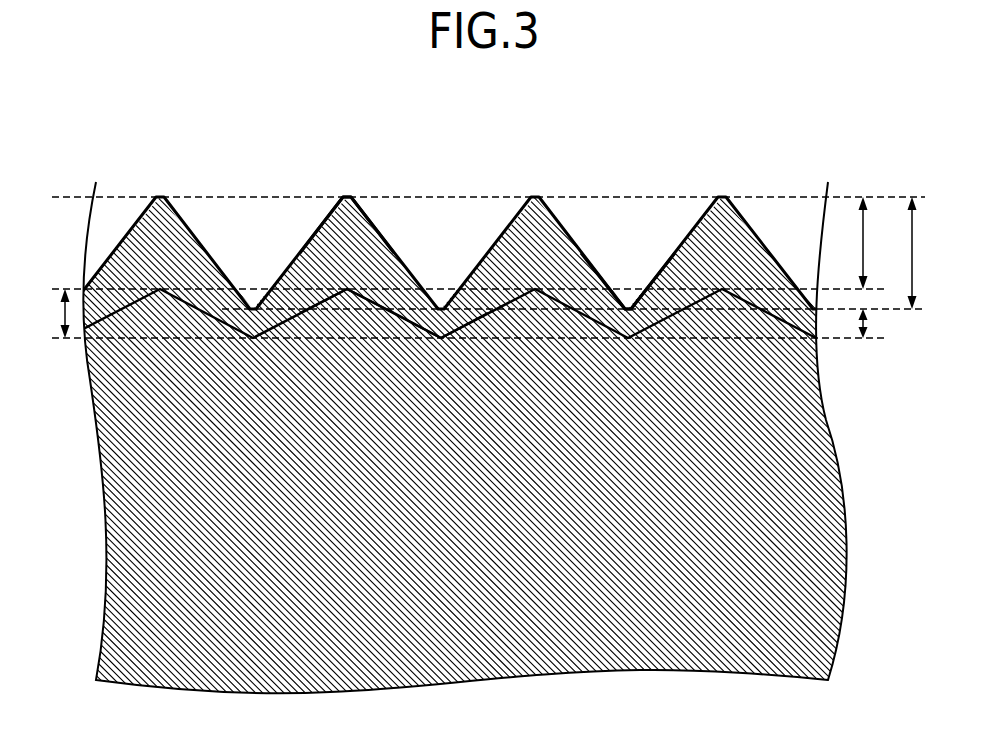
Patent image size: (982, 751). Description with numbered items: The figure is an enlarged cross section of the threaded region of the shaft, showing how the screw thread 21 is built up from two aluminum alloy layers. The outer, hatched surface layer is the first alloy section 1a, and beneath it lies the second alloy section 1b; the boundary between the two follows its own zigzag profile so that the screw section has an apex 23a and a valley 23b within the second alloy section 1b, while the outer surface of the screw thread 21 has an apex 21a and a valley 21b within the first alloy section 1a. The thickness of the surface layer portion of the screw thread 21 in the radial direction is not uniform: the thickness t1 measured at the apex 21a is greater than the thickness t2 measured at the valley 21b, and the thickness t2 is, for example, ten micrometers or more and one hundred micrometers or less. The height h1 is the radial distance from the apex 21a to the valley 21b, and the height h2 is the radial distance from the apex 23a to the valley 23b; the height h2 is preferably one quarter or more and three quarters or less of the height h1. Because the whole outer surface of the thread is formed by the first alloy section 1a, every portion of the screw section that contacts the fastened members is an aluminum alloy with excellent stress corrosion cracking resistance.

The first alloy section 1a is at (491, 406).
The second alloy section 1b is at (150, 515).
The screw thread 21 is at (446, 210).
The apex 21a is at (345, 197).
The valley 21b is at (629, 308).
The apex 23a is at (347, 290).
The valley 23b is at (441, 337).
The height of the apex h1 is at (925, 253).
The height of the apex h2 is at (53, 313).
The thickness of the apex t1 is at (874, 243).
The thickness of the valley t2 is at (874, 325).